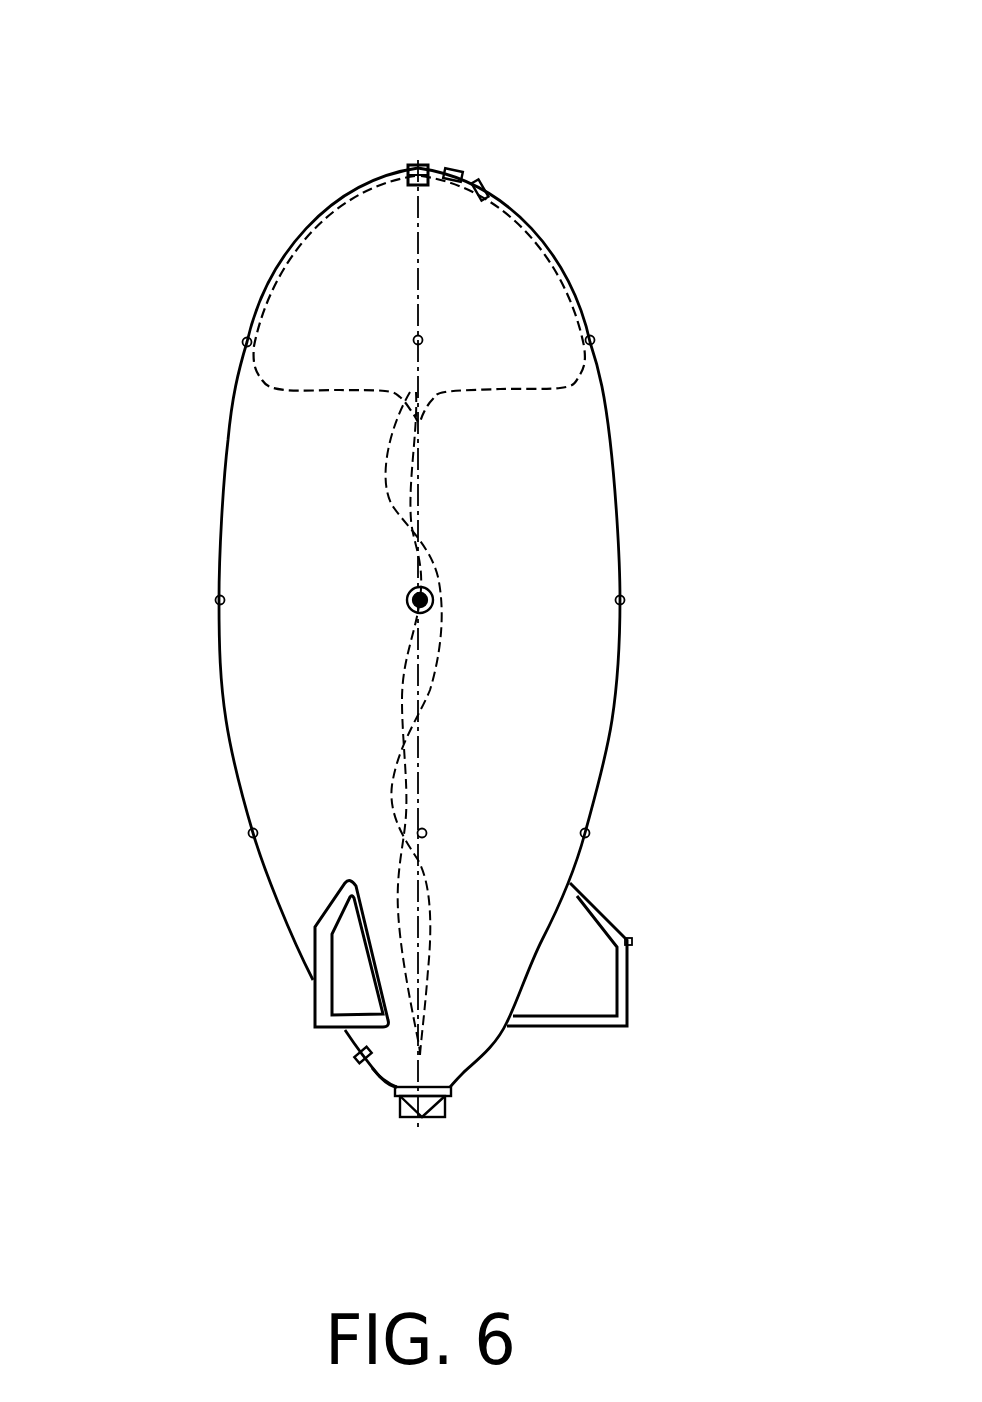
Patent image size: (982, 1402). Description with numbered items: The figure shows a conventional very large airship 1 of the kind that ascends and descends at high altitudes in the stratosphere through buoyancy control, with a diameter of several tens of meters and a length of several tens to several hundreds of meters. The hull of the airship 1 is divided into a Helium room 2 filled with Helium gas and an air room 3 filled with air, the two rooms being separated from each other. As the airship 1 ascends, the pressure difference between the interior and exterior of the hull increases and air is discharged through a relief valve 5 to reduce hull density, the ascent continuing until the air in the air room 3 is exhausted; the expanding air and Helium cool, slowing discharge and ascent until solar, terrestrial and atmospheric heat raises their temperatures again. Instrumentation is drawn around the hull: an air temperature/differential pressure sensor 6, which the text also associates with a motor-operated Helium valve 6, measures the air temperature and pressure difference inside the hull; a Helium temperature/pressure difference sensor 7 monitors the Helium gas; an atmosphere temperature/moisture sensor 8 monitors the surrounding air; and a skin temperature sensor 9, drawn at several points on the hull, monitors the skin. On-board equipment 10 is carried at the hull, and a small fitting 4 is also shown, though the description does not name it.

The airship 1 is at (655, 411).
The Helium room 2 is at (333, 392).
The air room 3 is at (270, 672).
The air valve 4 is at (355, 1058).
The relief valve 5 is at (382, 1077).
The air temperature/differential pressure sensor 6 is at (453, 167).
The Helium temperature/pressure difference sensor 7 is at (484, 182).
The atmosphere temperature/moisture sensor 8 is at (632, 940).
The skin temperature sensor 9 is at (414, 340).
The on-board equipment 10 is at (444, 1112).